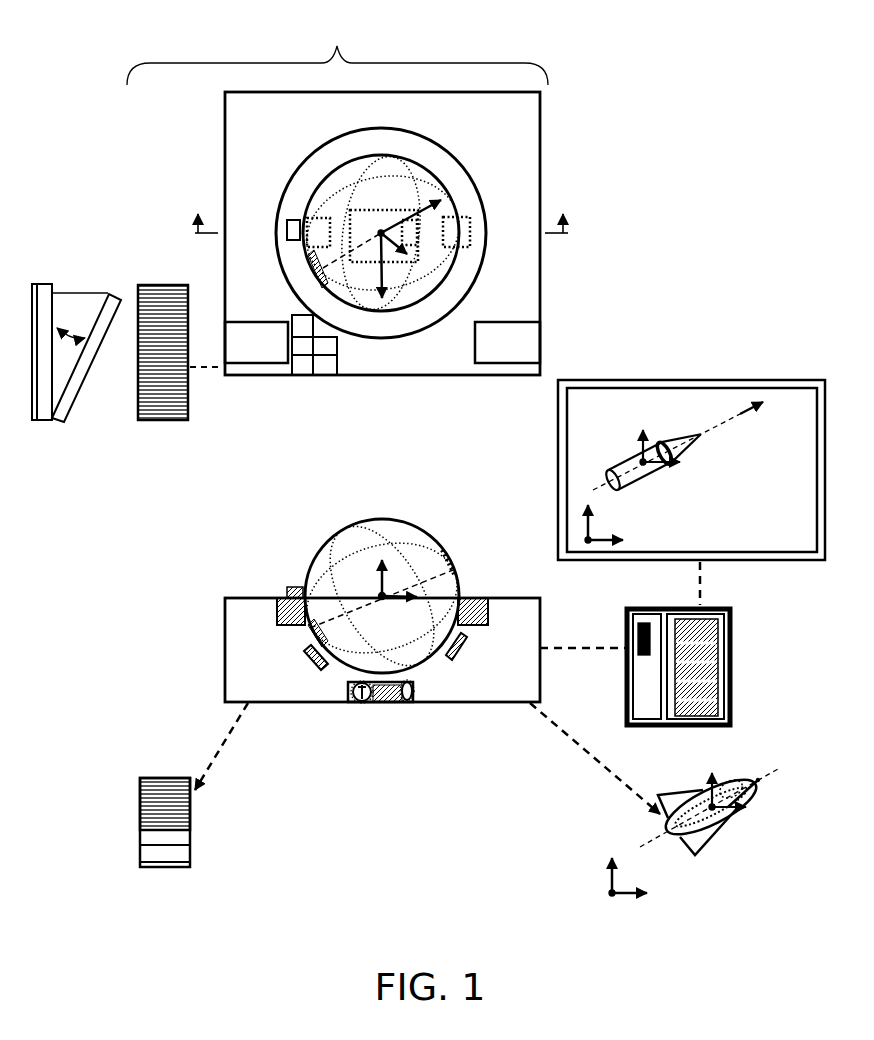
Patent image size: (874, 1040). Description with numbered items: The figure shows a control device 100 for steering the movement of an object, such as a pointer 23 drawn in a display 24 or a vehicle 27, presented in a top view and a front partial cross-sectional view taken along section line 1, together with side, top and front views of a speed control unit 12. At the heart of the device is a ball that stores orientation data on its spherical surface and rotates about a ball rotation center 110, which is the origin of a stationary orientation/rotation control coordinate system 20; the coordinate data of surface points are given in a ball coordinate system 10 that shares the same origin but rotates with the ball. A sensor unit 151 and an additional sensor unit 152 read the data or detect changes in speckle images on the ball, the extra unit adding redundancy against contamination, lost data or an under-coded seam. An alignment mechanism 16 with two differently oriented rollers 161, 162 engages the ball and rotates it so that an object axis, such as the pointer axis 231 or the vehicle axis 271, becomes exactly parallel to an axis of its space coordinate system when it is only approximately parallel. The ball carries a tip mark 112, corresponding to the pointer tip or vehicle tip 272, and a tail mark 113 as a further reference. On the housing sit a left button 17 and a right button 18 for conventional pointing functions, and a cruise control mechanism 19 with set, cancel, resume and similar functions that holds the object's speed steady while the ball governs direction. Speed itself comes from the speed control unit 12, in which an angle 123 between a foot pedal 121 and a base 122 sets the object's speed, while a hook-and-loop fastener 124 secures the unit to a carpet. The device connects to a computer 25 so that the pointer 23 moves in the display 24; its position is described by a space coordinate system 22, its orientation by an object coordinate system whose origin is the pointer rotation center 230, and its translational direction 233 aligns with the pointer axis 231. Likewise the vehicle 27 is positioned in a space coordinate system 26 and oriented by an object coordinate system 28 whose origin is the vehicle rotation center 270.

The control device 100 is at (337, 53).
The ball coordinate system 10 is at (427, 210).
The left button 17 is at (268, 353).
The right button 18 is at (512, 353).
The cruise control mechanism 19 is at (307, 371).
The section line 1 is at (380, 217).
The speed control unit 12 is at (147, 407).
The hook-and-loop fastener 124 is at (35, 285).
The base 122 is at (45, 285).
The foot pedal 121 is at (112, 297).
The angle 123 is at (70, 330).
The orientation/rotation control coordinate system 20 is at (380, 585).
The ball rotation center 110 is at (378, 592).
The tip mark 112 is at (447, 553).
The tail mark 113 is at (312, 632).
The additional sensor unit 152 is at (317, 666).
The sensor unit 151 is at (457, 657).
The alignment mechanism 16 is at (390, 703).
The roller 161 is at (360, 700).
The roller 162 is at (405, 700).
The display 24 is at (718, 542).
The space coordinate system 22 is at (605, 542).
The pointer 23 is at (618, 443).
The pointer axis 231 is at (722, 422).
The translational direction 233 is at (770, 398).
The pointer rotation center 230 is at (641, 457).
The computer 25 is at (722, 687).
The vehicle 27 is at (740, 770).
The vehicle rotation center 270 is at (703, 805).
The vehicle axis 271 is at (767, 773).
The vehicle tip 272 is at (758, 780).
The object coordinate system 28 is at (710, 780).
The space coordinate system 26 is at (612, 870).